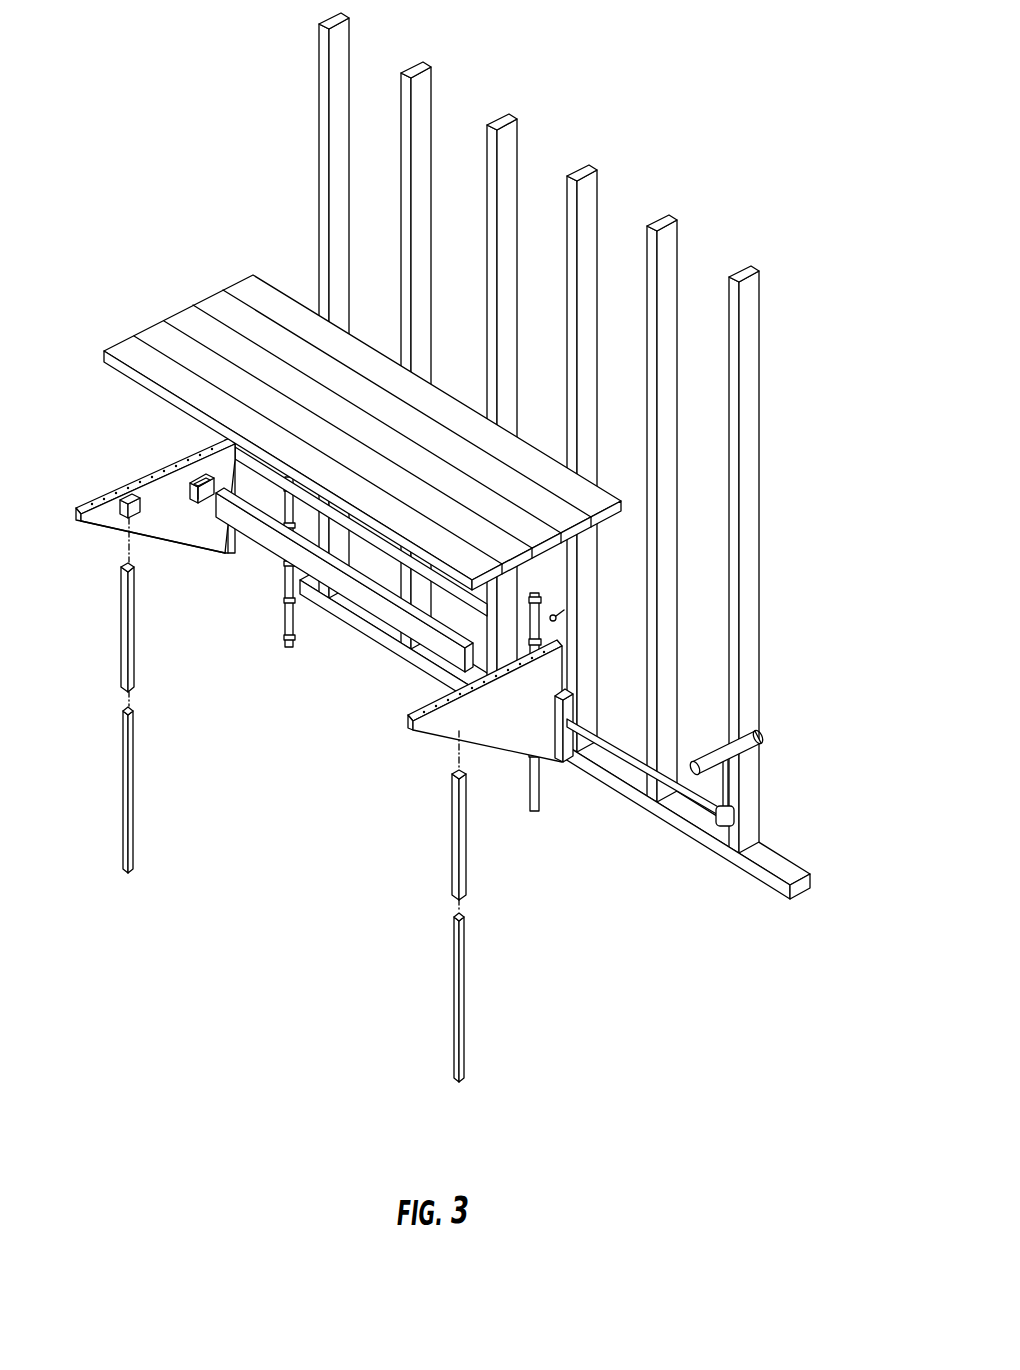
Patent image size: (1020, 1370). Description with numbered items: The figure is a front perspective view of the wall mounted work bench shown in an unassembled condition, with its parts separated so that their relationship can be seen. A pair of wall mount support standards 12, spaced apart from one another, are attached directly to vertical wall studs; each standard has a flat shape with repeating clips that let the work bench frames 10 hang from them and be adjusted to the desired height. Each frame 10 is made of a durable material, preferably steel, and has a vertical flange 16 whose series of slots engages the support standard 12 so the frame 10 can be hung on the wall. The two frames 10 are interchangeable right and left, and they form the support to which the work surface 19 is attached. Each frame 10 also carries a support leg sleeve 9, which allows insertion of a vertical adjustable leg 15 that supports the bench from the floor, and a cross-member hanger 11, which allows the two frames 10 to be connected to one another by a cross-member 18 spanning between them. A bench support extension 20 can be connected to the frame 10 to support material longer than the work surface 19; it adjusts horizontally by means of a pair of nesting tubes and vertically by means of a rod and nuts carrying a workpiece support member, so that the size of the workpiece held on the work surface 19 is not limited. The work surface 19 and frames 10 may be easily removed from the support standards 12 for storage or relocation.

The support leg sleeve 9 is at (142, 516).
The work bench frame 10 is at (140, 476).
The cross-member hanger 11 is at (190, 508).
The wall mount support standard 12 is at (290, 655).
The vertical adjustable legs 15 is at (116, 648).
The vertical flange 16 is at (116, 812).
The cross-member 18 is at (342, 602).
The work surface 19 is at (158, 318).
The bench support extension 20 is at (636, 774).